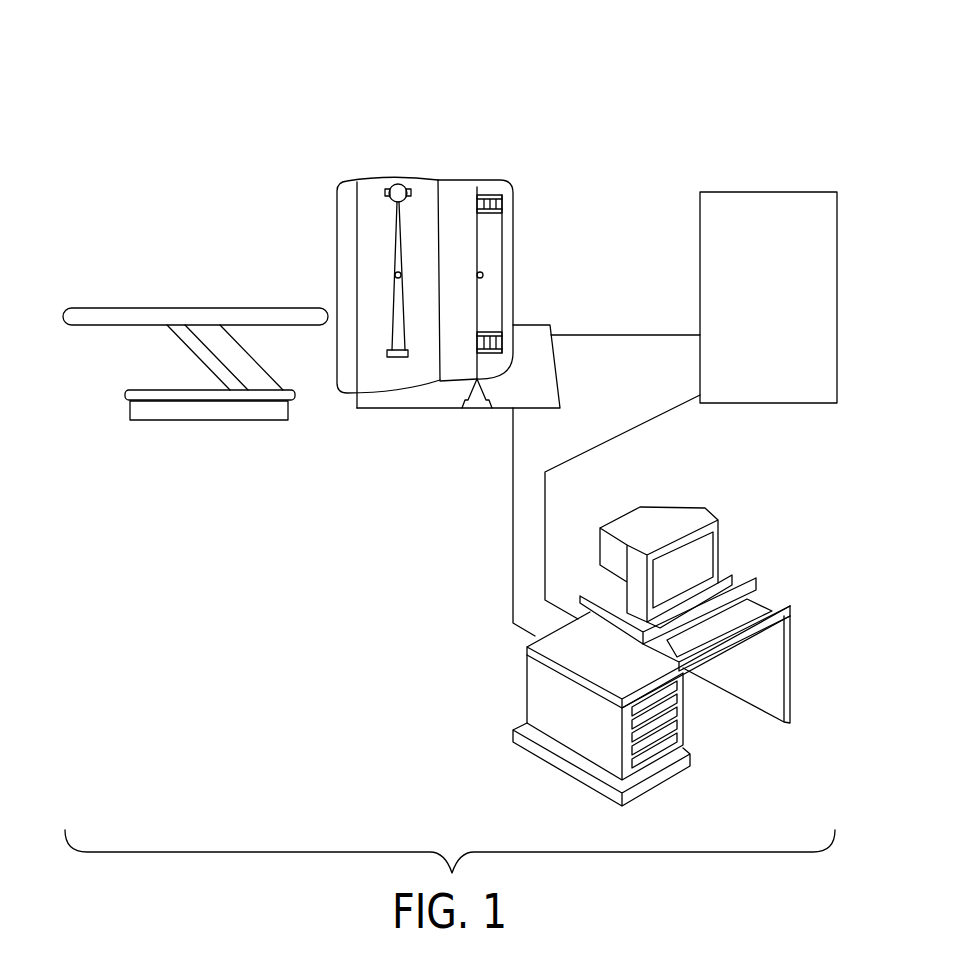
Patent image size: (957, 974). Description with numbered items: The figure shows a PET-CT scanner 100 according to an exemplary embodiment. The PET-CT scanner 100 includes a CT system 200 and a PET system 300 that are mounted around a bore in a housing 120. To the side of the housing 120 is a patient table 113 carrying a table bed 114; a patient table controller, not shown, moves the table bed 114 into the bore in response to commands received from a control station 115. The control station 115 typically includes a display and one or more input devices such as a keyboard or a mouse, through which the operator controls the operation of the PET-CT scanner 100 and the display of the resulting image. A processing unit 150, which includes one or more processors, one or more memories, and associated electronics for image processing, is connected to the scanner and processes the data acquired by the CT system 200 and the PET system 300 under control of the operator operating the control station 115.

The PET-CT scanner 100 is at (500, 68).
The patient table 113 is at (200, 250).
The table bed 114 is at (112, 308).
The housing 120 is at (370, 182).
The CT system 200 is at (412, 228).
The PET system 300 is at (462, 226).
The processing unit 150 is at (763, 191).
The control station 115 is at (748, 501).